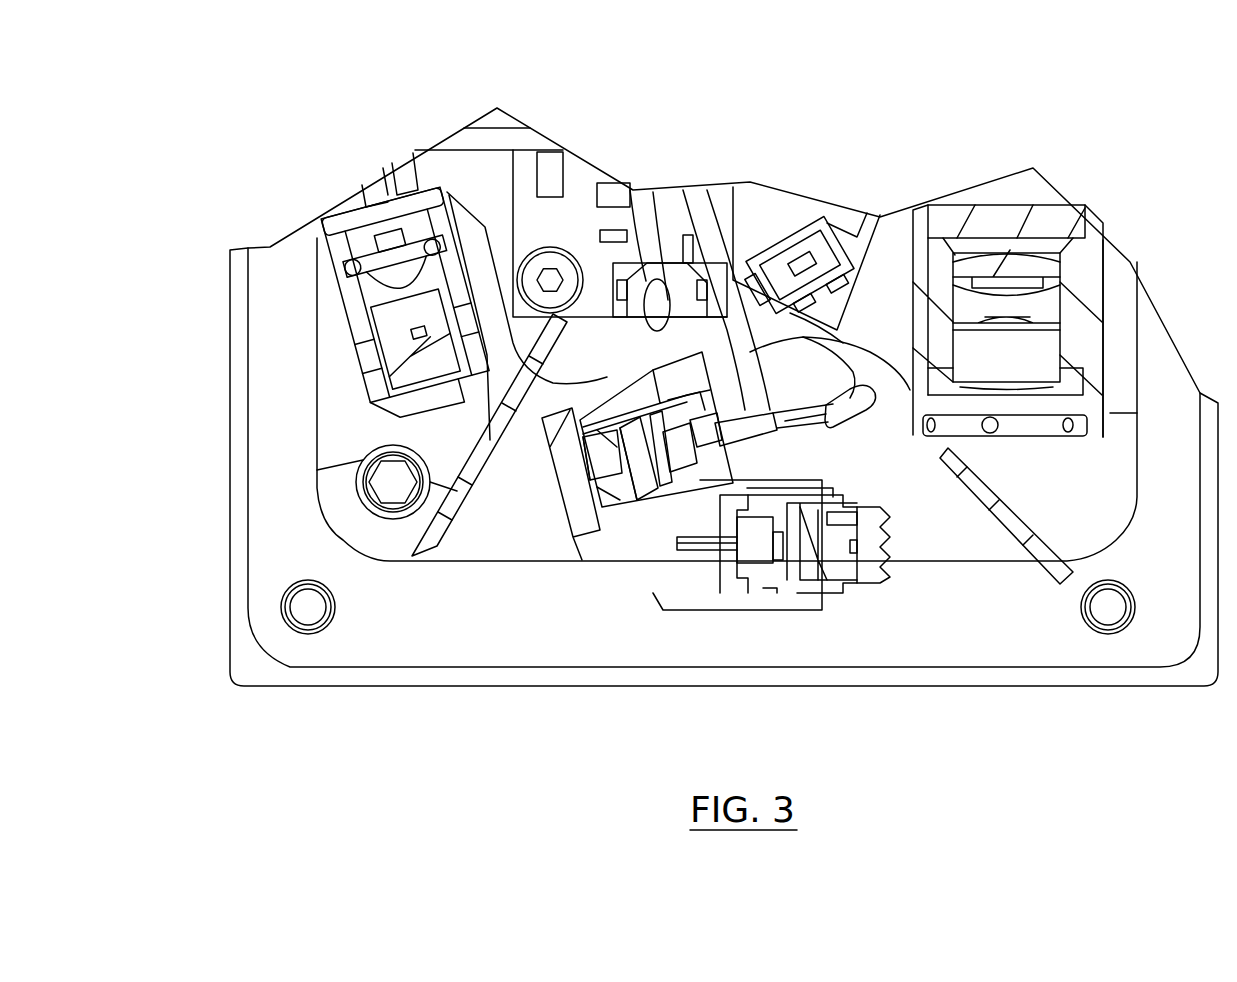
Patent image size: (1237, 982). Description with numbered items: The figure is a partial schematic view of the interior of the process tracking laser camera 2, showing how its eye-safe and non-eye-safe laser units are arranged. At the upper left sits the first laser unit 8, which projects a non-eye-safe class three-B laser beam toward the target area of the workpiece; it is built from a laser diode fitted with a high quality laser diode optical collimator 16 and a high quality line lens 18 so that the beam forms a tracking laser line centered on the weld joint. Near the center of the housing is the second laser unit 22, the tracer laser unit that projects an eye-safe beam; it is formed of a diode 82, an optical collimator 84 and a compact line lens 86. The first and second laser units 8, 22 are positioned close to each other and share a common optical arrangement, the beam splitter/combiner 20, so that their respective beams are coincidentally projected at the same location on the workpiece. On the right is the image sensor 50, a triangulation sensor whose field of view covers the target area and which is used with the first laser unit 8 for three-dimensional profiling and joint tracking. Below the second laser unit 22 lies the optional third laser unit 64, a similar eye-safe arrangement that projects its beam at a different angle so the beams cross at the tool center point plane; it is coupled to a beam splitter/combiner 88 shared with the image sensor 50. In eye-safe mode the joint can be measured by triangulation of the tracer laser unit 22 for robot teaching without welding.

The camera 2 is at (864, 177).
The first laser unit 8 is at (326, 320).
The laser diode optical collimator 16 is at (377, 280).
The line lens 18 is at (400, 412).
The beam splitter/combiner 20 is at (440, 545).
The second laser unit 22 is at (665, 550).
The image sensor 50 is at (1072, 283).
The third laser unit 64 is at (838, 604).
The diode 82 is at (677, 460).
The optical collimator 84 is at (640, 483).
The compact line lens 86 is at (577, 522).
The beam splitter/combiner 88 is at (1068, 561).